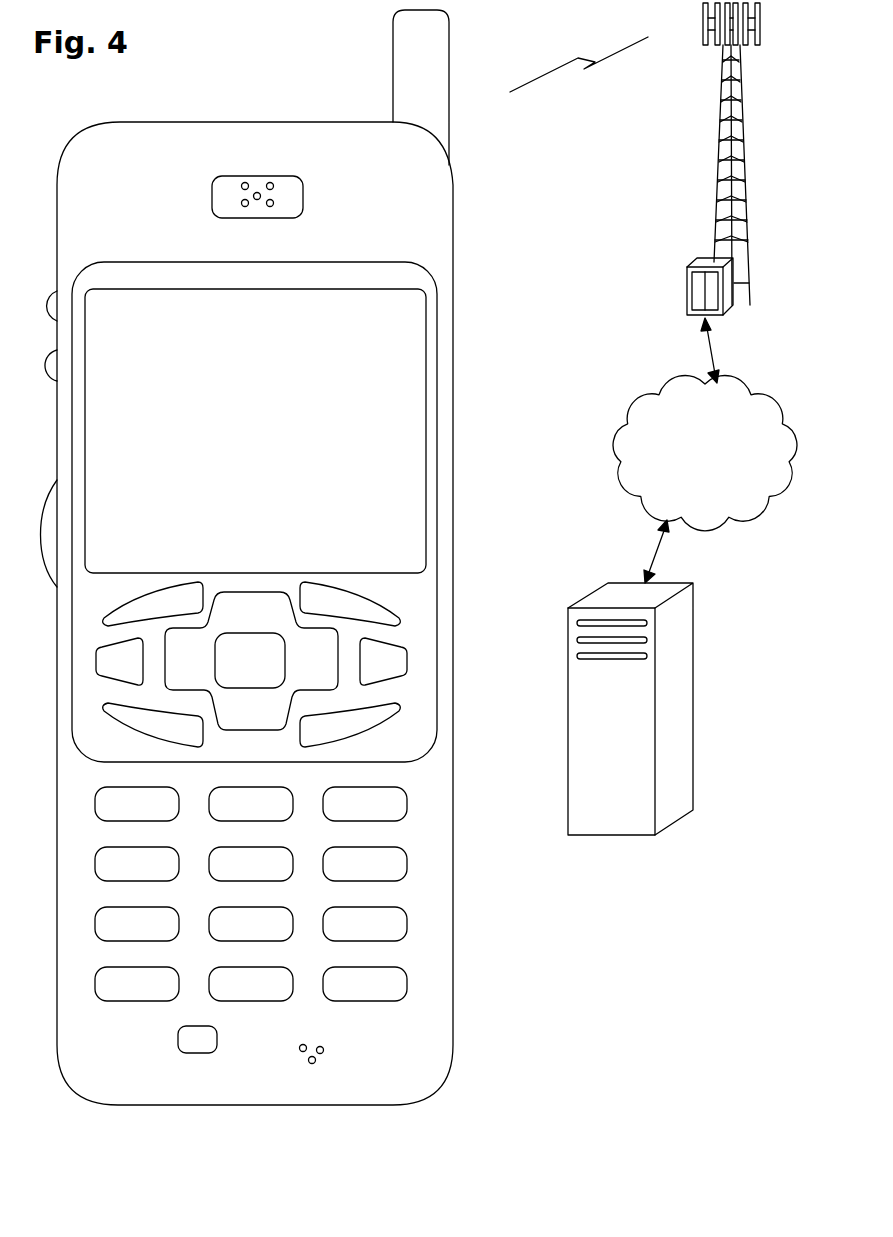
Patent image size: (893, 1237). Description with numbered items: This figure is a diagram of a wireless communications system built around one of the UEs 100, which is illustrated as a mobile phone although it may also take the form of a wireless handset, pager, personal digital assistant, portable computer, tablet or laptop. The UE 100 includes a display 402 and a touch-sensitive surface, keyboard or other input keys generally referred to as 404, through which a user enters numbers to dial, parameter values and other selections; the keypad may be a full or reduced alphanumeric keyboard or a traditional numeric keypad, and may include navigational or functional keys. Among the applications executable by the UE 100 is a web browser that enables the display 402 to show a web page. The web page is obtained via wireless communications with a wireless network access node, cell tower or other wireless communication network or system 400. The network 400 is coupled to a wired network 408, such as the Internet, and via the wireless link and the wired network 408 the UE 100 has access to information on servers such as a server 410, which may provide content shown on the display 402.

The UE 100 is at (284, 571).
The display 402 is at (428, 301).
The input keys 404 is at (462, 583).
The wireless communication network or system 400 is at (717, 173).
The wired network 408 is at (634, 498).
The server 410 is at (610, 836).